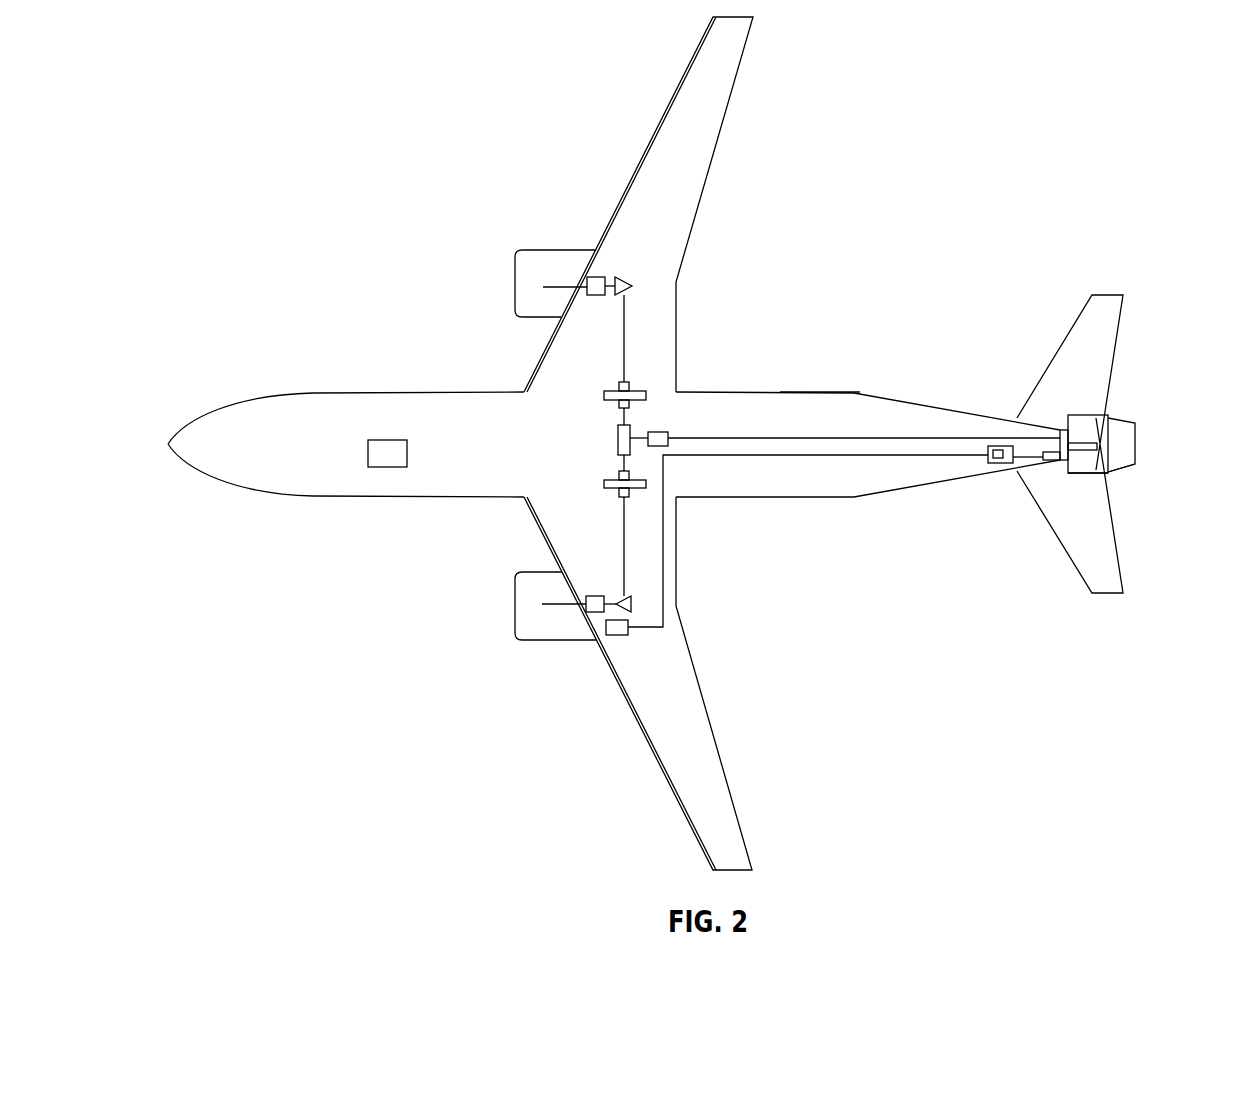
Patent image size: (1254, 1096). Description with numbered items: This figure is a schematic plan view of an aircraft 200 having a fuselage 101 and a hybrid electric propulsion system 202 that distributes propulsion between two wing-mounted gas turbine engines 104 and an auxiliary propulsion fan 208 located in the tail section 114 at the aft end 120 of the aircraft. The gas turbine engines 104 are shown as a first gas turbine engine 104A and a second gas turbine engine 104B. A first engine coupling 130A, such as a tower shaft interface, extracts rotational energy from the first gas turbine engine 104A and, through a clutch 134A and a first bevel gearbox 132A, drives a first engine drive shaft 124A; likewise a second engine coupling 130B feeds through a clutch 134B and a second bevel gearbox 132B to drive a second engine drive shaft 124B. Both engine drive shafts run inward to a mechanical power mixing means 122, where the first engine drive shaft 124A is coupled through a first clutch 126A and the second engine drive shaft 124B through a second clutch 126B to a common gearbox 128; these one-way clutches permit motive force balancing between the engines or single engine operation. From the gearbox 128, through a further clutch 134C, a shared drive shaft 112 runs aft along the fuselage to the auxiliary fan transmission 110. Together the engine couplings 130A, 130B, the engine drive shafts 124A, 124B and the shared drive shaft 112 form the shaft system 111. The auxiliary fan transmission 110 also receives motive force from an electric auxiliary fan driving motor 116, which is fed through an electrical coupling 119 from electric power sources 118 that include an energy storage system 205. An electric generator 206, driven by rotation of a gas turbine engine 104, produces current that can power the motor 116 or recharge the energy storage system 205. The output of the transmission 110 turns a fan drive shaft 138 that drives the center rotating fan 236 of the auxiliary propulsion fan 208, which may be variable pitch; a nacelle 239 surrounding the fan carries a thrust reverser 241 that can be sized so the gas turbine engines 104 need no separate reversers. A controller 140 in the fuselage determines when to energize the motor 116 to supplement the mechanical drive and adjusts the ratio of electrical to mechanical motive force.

The aircraft 200 is at (702, 443).
The fuselage 101 is at (882, 393).
The shaft system 111 is at (790, 404).
The propulsion system 202 is at (792, 299).
The tail section 114 is at (1015, 418).
The auxiliary fan transmission 110 is at (1063, 428).
The aft end 120 is at (1146, 467).
The center rotating fan 236 is at (1095, 417).
The fan drive shaft 138 is at (1082, 450).
The auxiliary propulsion fan 208 is at (1110, 432).
The nacelle 239 is at (1132, 467).
The thrust reverser 241 is at (1110, 477).
The controller 140 is at (390, 468).
The gas turbine engines 104 is at (505, 444).
The first gas turbine engine 104A is at (531, 258).
The second gas turbine engine 104B is at (531, 641).
The mechanical power mixing means 122 is at (746, 442).
The first engine coupling 130A is at (545, 287).
The second engine coupling 130B is at (545, 606).
The clutch 134A is at (597, 297).
The clutch 134B is at (597, 595).
The clutch 134C is at (657, 432).
The first bevel gearbox 132A is at (629, 279).
The second bevel gearbox 132B is at (629, 613).
The first engine drive shaft 124A is at (625, 338).
The second engine drive shaft 124B is at (625, 523).
The first clutch 126A is at (604, 395).
The second clutch 126B is at (602, 483).
The gearbox 128 is at (618, 440).
The electric generator 206 is at (618, 636).
The shared drive shaft 112 is at (862, 437).
The energy storage system 205 is at (988, 452).
The electric power sources 118 is at (994, 464).
The electrical coupling 119 is at (1027, 459).
The electric auxiliary fan driving motor 116 is at (1053, 461).